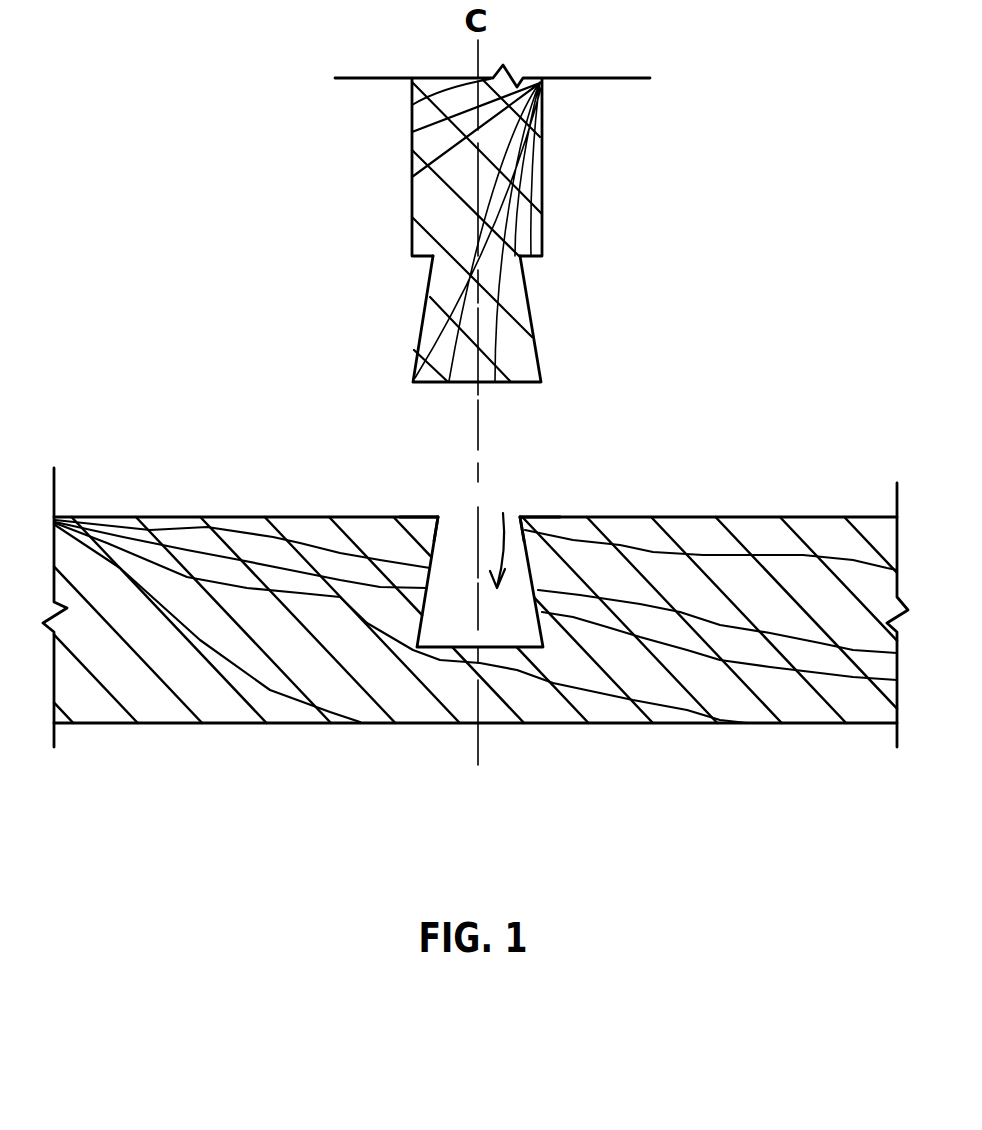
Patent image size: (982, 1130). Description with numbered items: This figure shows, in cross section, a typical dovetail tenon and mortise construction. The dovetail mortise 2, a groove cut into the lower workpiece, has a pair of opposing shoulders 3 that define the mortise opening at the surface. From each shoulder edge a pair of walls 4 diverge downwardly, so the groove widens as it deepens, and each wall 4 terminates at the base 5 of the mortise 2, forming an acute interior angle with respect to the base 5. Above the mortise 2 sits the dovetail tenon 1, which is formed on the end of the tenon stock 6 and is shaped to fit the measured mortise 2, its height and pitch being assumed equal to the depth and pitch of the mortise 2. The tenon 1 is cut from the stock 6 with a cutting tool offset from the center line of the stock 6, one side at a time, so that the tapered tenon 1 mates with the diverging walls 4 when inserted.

The dovetail tenon 1 is at (518, 352).
The dovetail mortise 2 is at (500, 537).
The shoulders 3 is at (414, 528).
The walls 4 is at (421, 572).
The base 5 is at (503, 647).
The tenon stock 6 is at (541, 206).